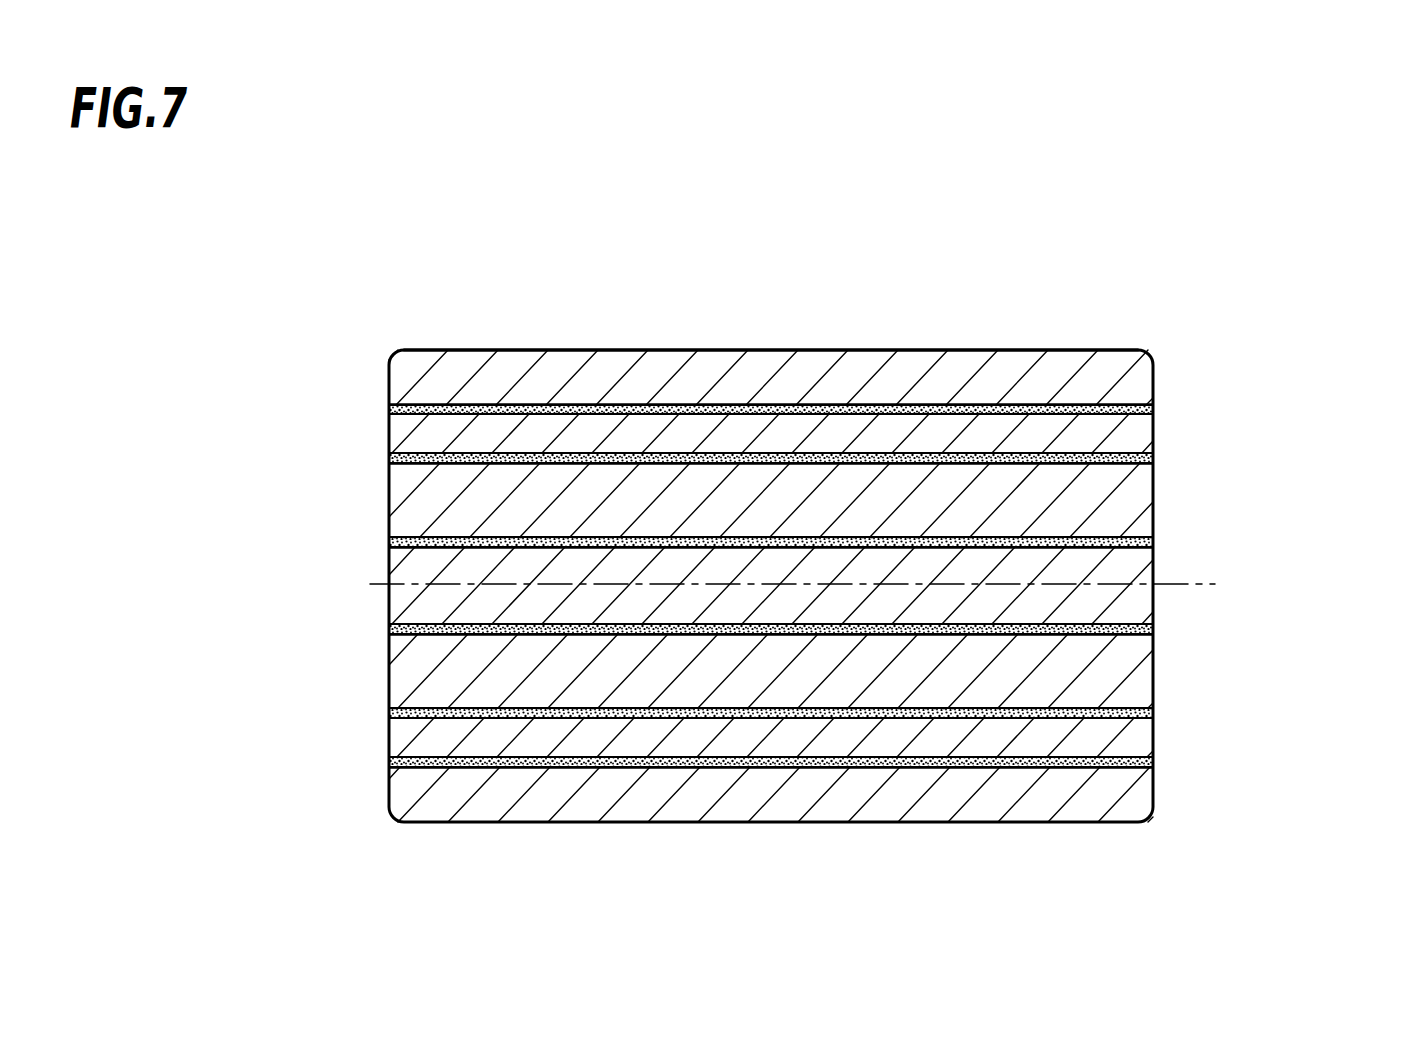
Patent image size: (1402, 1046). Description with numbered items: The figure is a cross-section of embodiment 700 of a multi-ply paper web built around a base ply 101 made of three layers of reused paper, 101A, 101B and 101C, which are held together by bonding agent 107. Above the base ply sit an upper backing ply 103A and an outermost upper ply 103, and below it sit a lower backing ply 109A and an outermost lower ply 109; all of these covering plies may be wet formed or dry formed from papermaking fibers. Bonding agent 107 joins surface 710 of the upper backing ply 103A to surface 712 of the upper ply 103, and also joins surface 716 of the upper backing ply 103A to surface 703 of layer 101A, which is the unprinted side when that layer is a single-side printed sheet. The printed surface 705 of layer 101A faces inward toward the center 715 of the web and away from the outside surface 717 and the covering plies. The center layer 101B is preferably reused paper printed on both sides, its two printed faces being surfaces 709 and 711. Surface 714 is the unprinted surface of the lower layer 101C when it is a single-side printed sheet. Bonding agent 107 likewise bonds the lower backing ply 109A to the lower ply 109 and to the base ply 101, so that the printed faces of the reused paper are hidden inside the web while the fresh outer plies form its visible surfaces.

The paper web embodiment 700 is at (362, 290).
The upper ply 103 is at (513, 367).
The upper backing ply 103A is at (653, 406).
The outside surface 717 is at (887, 350).
The bonding agent 107 is at (390, 542).
The surface of upper backing ply 710 is at (1083, 404).
The surface of upper ply 712 is at (1125, 414).
The unprinted surface of layer 101A 703 is at (1083, 460).
The surface of upper backing ply 716 is at (1127, 463).
The base ply layer 101A is at (1095, 500).
The printed surface of layer 101B 709 is at (1083, 538).
The printed surface of layer 101A 705 is at (1127, 547).
The base ply 101 is at (335, 463).
The base ply layer 101B is at (1095, 598).
The printed surface of layer 101B 711 is at (1127, 635).
The base ply layer 101C is at (1095, 680).
The unprinted surface of layer 101C 714 is at (1125, 720).
The center of web 715 is at (500, 582).
The lower ply 109 is at (660, 792).
The lower backing ply 109A is at (727, 740).